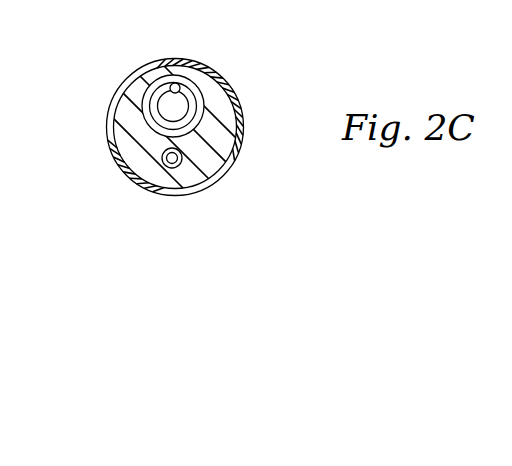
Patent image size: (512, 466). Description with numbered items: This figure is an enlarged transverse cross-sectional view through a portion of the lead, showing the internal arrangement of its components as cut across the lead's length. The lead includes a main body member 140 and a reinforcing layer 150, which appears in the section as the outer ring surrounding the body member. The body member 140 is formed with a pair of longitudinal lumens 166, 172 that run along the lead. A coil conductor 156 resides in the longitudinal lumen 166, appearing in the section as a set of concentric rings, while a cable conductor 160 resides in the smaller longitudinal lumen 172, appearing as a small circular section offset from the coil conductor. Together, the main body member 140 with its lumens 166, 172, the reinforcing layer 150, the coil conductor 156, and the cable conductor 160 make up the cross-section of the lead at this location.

The main body member 140 is at (222, 104).
The reinforcing layer 150 is at (237, 145).
The coil conductor 156 is at (158, 110).
The longitudinal lumen 166 is at (146, 110).
The cable conductor 160 is at (168, 167).
The longitudinal lumen 172 is at (163, 155).